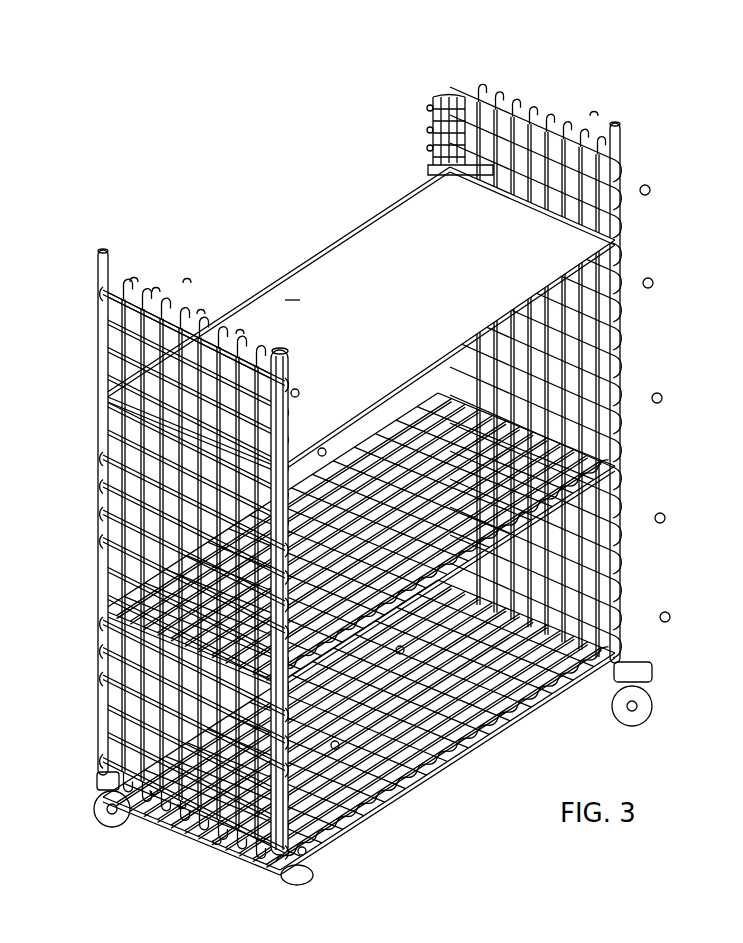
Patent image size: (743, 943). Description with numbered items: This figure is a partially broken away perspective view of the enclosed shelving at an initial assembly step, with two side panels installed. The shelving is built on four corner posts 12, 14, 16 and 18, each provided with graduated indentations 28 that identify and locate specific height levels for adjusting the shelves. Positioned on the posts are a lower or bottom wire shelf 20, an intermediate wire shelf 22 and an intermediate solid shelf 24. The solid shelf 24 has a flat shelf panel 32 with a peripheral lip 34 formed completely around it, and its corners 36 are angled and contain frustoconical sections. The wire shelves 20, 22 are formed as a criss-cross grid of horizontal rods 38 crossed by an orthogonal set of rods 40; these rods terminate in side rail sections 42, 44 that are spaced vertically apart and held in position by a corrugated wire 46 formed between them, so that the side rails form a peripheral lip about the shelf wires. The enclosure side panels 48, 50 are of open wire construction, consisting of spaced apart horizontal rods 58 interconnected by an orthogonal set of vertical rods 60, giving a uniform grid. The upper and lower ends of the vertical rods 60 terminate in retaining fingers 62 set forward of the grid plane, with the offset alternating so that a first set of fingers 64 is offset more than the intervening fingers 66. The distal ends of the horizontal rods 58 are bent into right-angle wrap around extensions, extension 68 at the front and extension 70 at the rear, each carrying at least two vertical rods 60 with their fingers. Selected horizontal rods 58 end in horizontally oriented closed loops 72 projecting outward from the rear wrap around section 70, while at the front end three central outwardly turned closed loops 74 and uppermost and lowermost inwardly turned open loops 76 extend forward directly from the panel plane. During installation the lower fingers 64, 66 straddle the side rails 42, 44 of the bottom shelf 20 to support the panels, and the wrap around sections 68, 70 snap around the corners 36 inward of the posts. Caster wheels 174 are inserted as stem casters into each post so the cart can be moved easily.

The corner post 12 is at (103, 248).
The corner post 14 is at (292, 352).
The corner post 16 is at (452, 100).
The corner post 18 is at (626, 152).
The lower or bottom wire shelf 20 is at (498, 748).
The intermediate wire shelf 22 is at (465, 582).
The intermediate solid shelf 24 is at (305, 290).
The graduated indentation 28 is at (622, 130).
The flat shelf panel 32 is at (355, 235).
The peripheral lip 34 is at (378, 212).
The corners 36 is at (428, 168).
The horizontal rods 38 is at (372, 430).
The orthogonal set of rods 40 is at (430, 470).
The side rail section 42 is at (425, 612).
The side rail section 44 is at (400, 624).
The corrugated wire 46 is at (446, 600).
The side panel 48 is at (100, 425).
The side panel 50 is at (650, 222).
The horizontal rods 58 is at (638, 178).
The vertical rods 60 is at (620, 413).
The retaining fingers 62 is at (590, 114).
The alternating fingers 64 is at (562, 112).
The alternating fingers 66 is at (538, 100).
The wrap around extension 68 is at (638, 248).
The wrap around extension 70 is at (430, 165).
The closed loops 72 is at (137, 296).
The loops 74 is at (652, 280).
The loops 76 is at (650, 193).
The caster wheels 174 is at (658, 698).